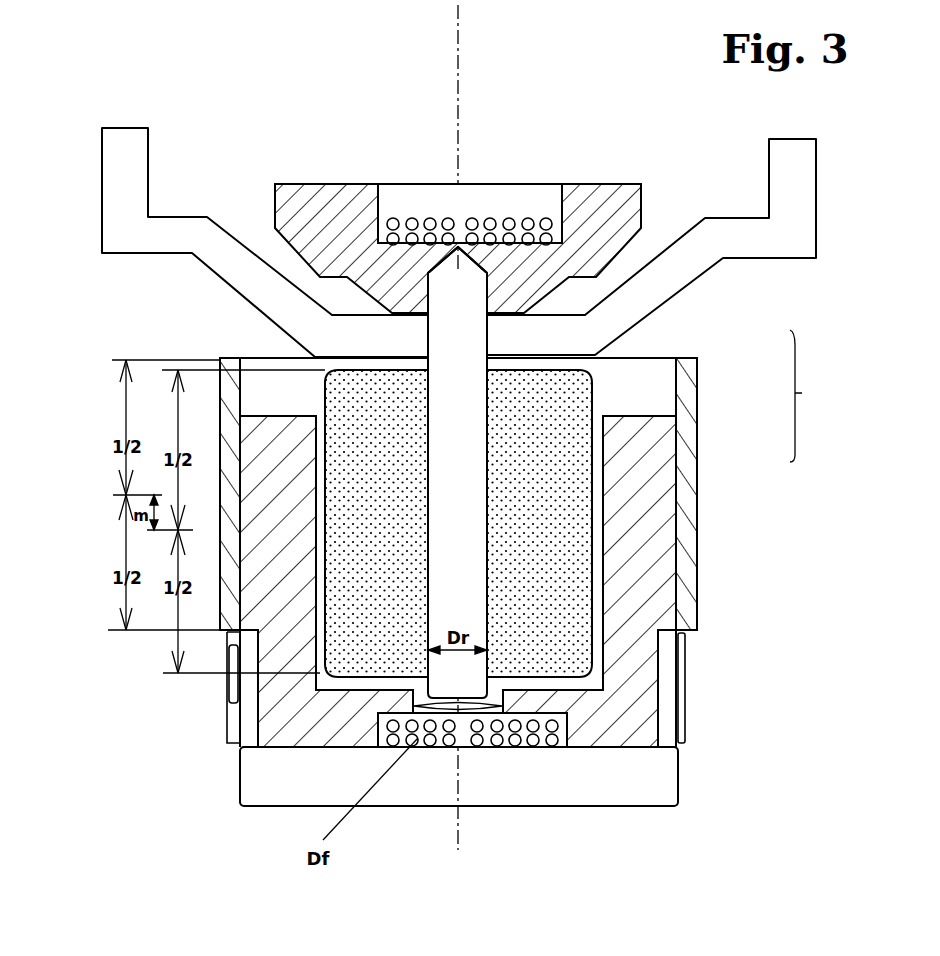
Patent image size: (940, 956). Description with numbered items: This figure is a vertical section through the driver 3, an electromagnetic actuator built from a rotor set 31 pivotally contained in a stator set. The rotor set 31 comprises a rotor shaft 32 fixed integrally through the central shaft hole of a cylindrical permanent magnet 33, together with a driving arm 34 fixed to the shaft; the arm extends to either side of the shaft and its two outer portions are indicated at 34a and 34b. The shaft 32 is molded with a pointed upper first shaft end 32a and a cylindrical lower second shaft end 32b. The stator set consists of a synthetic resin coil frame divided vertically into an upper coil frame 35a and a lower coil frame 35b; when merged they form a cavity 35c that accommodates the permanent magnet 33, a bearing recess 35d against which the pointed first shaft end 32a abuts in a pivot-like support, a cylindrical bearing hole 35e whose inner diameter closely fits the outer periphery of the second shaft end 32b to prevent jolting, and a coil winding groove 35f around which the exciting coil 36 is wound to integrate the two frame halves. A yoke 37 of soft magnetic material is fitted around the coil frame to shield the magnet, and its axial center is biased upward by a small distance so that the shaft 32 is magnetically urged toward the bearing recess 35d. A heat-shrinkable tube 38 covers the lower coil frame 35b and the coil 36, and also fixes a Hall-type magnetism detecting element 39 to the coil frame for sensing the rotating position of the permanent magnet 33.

The driver 3 is at (828, 285).
The rotor set 31 is at (812, 396).
The rotor shaft 32 is at (468, 487).
The first shaft end 32a is at (452, 245).
The second shaft end 32b is at (450, 705).
The permanent magnet 33 is at (573, 427).
The driving arm 34 is at (655, 285).
The right arm of armature plate 34a is at (810, 170).
The left arm of armature plate 34b is at (115, 162).
The upper coil frame 35a is at (345, 210).
The lower coil frame 35b is at (665, 640).
The cavity 35c is at (240, 703).
The bearing recess 35d is at (480, 270).
The bearing hole 35e is at (462, 712).
The coil winding groove 35f is at (545, 208).
The exciting coil 36 is at (408, 222).
The yoke 37 is at (233, 440).
The heat-shrinkable tube 38 is at (232, 643).
The magnetism detecting element 39 is at (233, 672).